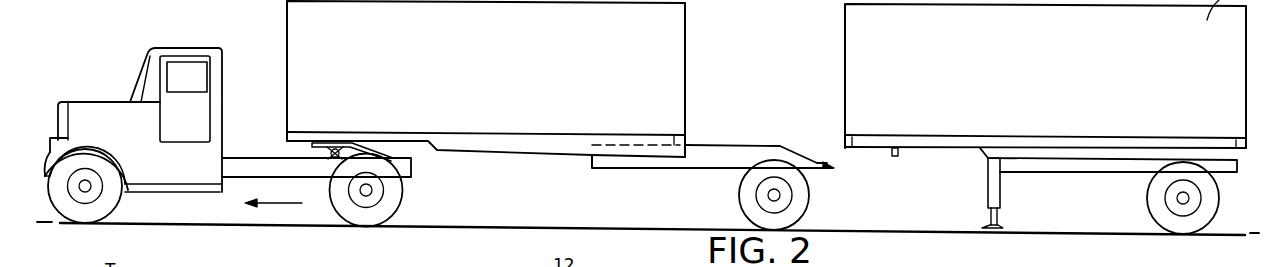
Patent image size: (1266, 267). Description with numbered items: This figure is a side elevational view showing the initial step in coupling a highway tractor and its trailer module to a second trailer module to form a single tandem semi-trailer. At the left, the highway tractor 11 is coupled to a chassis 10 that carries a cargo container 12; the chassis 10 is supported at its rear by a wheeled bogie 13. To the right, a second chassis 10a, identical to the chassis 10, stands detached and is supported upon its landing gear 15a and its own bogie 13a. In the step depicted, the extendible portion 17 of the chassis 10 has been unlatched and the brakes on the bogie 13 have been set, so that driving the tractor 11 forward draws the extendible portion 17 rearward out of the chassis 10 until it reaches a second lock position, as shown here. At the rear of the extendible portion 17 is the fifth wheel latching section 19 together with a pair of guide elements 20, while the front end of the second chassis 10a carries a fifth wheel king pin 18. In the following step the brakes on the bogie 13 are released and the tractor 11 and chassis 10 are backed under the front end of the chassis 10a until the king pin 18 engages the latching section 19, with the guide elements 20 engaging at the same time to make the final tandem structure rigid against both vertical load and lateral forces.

The chassis 10 is at (512, 145).
The second chassis 10a is at (970, 142).
The highway tractor 11 is at (115, 108).
The cargo container 12 is at (685, 52).
The bogie 13 is at (808, 203).
The bogie 13a is at (1213, 216).
The landing gear 15a is at (1003, 195).
The extendible portion 17 is at (720, 155).
The fifth wheel king pin 18 is at (893, 162).
The fifth wheel latching section 19 is at (798, 147).
The guide elements 20 is at (827, 160).